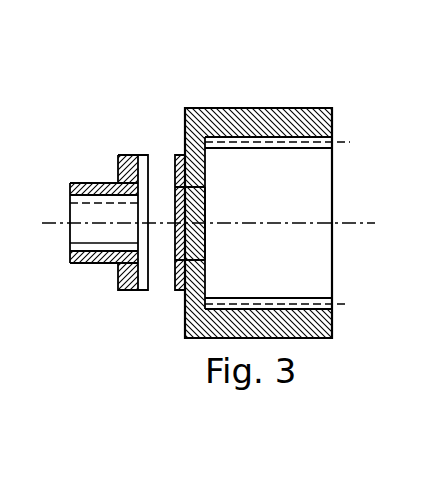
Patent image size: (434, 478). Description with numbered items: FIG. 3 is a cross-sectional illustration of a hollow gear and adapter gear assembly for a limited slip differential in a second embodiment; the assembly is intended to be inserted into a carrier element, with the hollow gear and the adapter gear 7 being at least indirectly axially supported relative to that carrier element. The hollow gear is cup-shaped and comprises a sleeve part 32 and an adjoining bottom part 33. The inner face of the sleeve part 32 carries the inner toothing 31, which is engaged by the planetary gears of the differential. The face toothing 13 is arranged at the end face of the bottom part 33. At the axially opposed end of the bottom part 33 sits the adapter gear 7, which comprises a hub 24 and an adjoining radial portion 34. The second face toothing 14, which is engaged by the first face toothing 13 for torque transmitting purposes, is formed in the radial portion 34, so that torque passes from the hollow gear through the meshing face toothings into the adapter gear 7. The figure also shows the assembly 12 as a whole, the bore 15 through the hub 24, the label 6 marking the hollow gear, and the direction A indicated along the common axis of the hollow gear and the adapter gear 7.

The coupling arrangement 12 is at (162, 301).
The face toothing 13 is at (177, 155).
The second face toothing 14 is at (147, 155).
The bore 15 is at (95, 251).
The hub 24 is at (82, 183).
The inner toothing 31 is at (266, 306).
The sleeve part 32 is at (285, 120).
The bottom part 33 is at (198, 173).
The radial portion 34 is at (125, 290).
The second component 6 is at (183, 69).
The adapter gear 7 is at (98, 142).
The direction arrow A is at (351, 223).